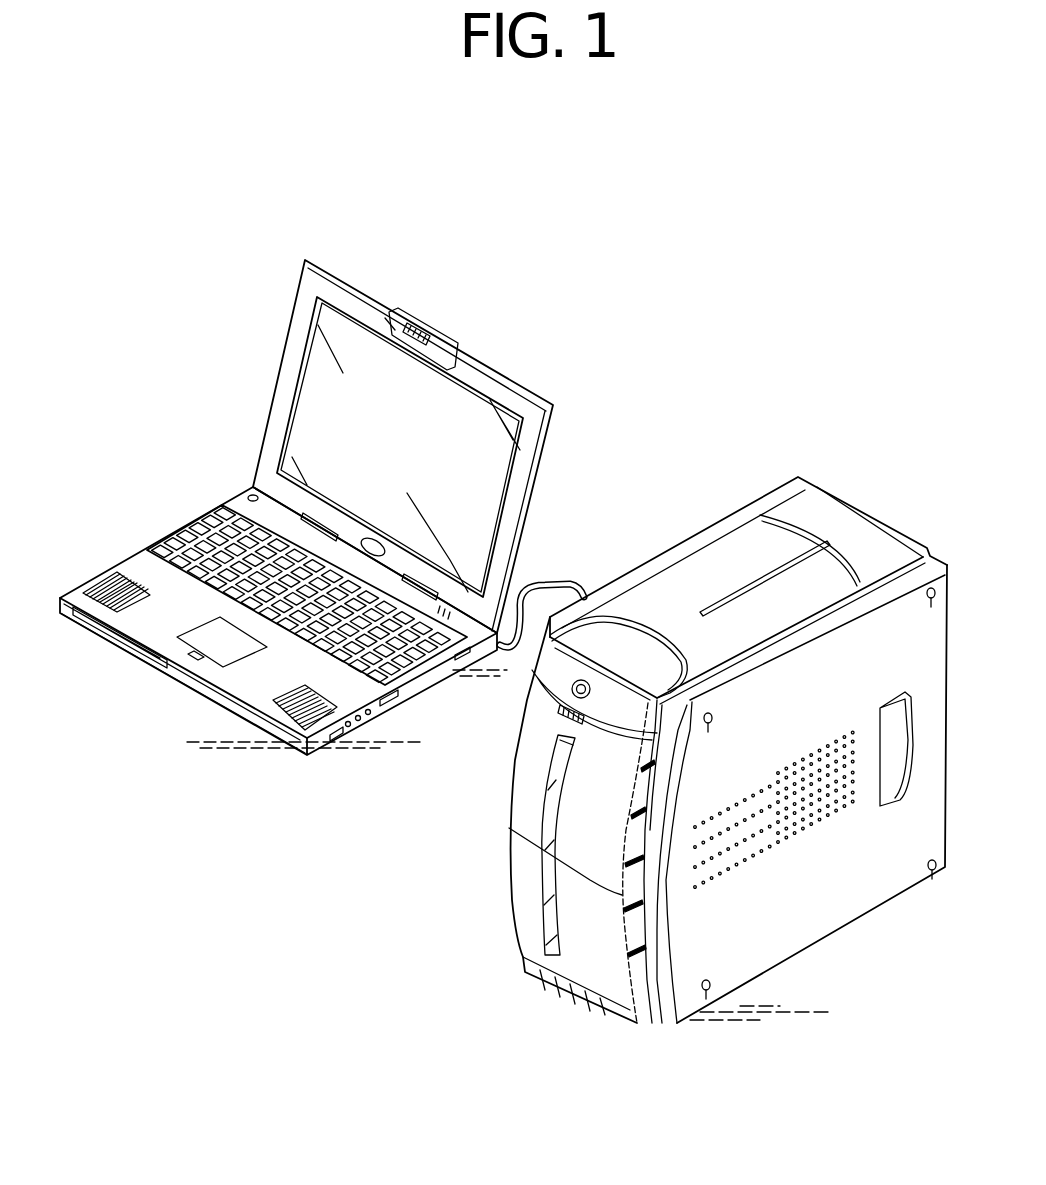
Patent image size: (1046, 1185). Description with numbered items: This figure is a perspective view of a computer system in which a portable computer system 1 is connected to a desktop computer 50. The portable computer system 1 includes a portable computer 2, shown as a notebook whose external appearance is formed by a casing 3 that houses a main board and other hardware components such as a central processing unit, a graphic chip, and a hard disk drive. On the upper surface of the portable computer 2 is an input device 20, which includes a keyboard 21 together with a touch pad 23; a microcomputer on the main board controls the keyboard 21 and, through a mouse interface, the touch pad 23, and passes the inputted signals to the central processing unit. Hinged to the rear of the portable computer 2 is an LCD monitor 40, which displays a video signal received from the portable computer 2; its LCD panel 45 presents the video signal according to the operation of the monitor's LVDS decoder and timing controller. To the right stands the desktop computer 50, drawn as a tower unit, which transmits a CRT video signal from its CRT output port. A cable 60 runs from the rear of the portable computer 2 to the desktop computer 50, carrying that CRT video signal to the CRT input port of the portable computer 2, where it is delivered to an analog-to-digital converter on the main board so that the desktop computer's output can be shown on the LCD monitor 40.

The portable computer system 1 is at (238, 346).
The portable computer 2 is at (156, 512).
The casing 3 is at (308, 758).
The input device 20 is at (130, 722).
The keyboard 21 is at (183, 570).
The touch pad 23 is at (203, 648).
The LCD monitor 40 is at (405, 285).
The LCD panel 45 is at (502, 455).
The desktop computer 50 is at (855, 960).
The cable 60 is at (550, 582).